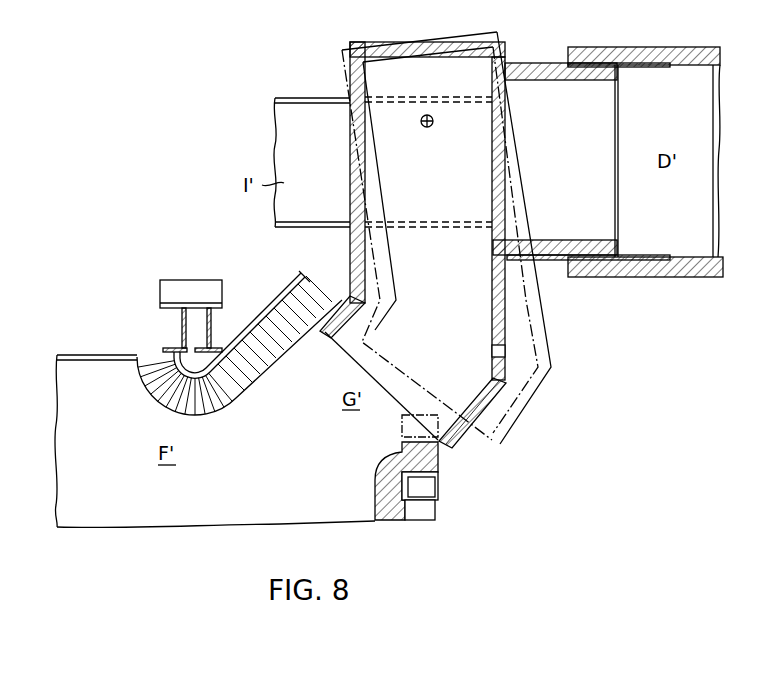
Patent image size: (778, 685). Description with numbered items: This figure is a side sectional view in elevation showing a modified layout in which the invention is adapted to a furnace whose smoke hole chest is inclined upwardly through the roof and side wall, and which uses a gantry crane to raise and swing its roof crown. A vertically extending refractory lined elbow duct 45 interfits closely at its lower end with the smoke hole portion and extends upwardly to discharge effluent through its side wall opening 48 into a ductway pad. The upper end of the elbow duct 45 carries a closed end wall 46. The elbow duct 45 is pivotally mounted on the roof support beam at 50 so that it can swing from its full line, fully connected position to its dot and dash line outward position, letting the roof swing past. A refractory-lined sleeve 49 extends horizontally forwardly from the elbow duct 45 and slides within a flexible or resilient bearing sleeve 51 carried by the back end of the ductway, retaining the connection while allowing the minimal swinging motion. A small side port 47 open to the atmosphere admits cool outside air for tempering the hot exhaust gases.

The elbow duct 45 is at (351, 250).
The closed end wall 46 is at (387, 44).
The side port 47 is at (494, 352).
The side wall opening 48 is at (493, 236).
The refractory-lined sleeve 49 is at (562, 241).
The pivot mounting 50 is at (422, 125).
The bearing sleeve 51 is at (652, 257).